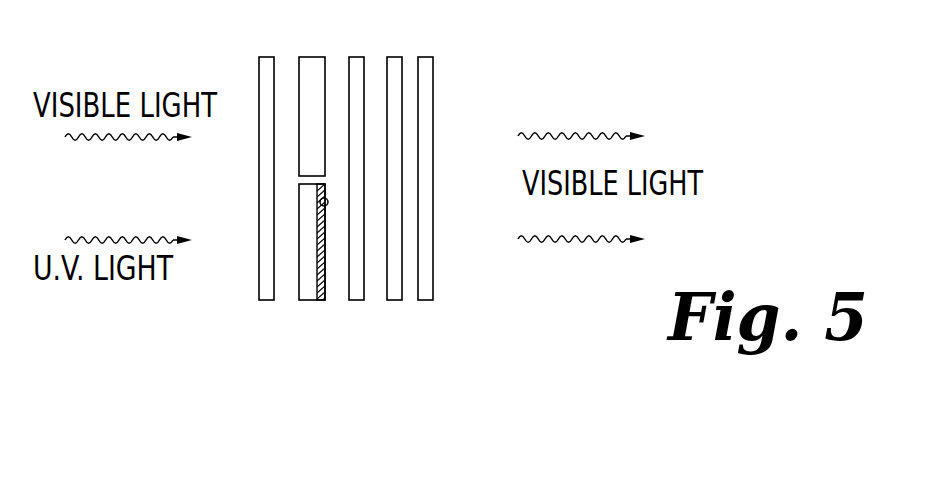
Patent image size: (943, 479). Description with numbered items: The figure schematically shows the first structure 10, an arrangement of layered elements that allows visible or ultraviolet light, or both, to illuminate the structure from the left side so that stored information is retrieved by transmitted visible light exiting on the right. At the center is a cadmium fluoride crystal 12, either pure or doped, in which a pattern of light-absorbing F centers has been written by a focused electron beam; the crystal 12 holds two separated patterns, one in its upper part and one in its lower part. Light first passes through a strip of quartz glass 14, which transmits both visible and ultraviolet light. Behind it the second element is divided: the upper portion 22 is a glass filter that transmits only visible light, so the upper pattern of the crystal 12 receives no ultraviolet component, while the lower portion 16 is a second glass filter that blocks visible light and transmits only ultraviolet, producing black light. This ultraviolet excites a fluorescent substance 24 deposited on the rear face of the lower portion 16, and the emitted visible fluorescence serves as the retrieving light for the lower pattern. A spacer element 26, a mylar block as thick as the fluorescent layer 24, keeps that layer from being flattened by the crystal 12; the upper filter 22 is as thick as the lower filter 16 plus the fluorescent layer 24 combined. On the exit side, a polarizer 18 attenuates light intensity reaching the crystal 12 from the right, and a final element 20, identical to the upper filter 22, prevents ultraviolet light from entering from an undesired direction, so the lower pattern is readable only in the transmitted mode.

The first structure 10 is at (441, 79).
The cadmium fluoride crystal 12 is at (357, 82).
The quartz glass strip 14 is at (265, 300).
The lower portion of second element 16 is at (295, 273).
The polarizer 18 is at (393, 300).
The anti-ultraviolet filter element 20 is at (433, 285).
The upper portion of second element 22 is at (303, 90).
The fluorescent substance 24 is at (321, 204).
The spacer element 26 is at (326, 287).